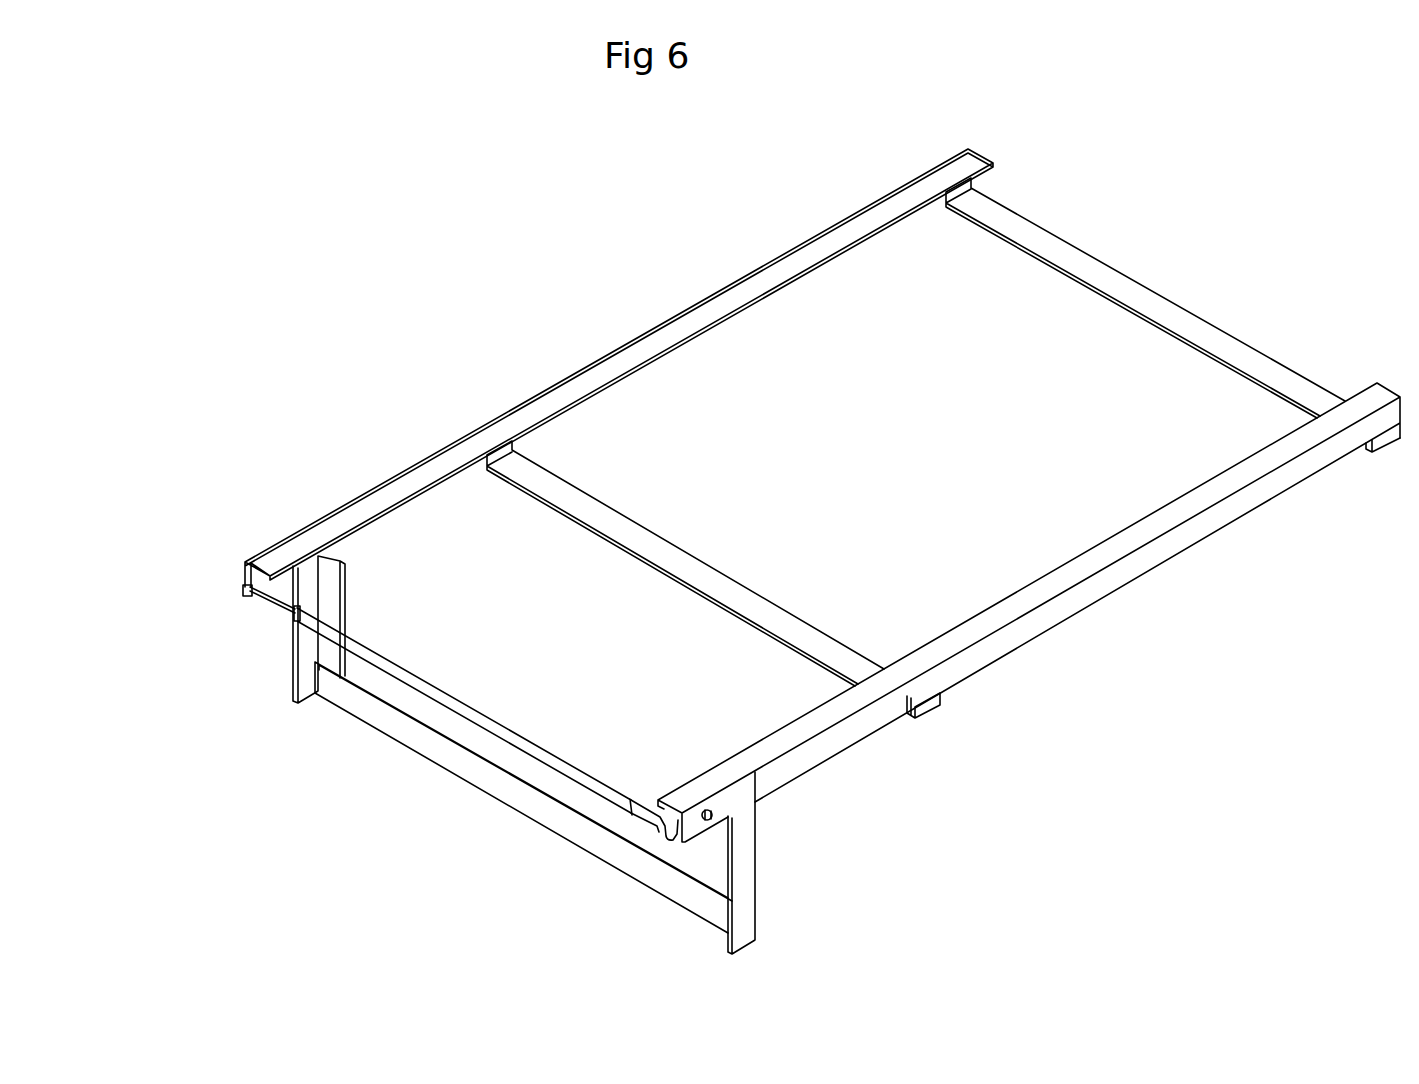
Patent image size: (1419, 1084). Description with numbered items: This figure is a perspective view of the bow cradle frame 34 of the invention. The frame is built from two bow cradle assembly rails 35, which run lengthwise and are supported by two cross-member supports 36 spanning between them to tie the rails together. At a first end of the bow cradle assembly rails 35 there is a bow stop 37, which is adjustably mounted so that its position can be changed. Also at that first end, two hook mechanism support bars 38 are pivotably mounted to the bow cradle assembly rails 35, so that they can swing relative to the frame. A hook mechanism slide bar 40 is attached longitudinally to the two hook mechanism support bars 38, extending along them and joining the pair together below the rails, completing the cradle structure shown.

The bow cradle frame 34 is at (480, 196).
The bow cradle assembly rails 35 is at (1038, 556).
The cross-member supports 36 is at (1136, 274).
The bow stop 37 is at (482, 681).
The hook mechanism support bars 38 is at (279, 660).
The hook mechanism slide bar 40 is at (374, 746).